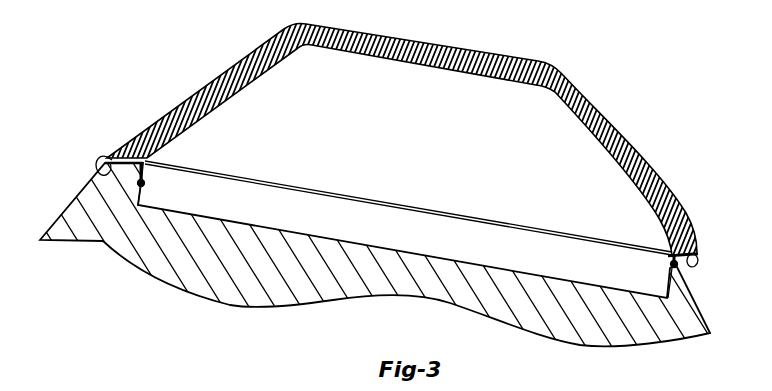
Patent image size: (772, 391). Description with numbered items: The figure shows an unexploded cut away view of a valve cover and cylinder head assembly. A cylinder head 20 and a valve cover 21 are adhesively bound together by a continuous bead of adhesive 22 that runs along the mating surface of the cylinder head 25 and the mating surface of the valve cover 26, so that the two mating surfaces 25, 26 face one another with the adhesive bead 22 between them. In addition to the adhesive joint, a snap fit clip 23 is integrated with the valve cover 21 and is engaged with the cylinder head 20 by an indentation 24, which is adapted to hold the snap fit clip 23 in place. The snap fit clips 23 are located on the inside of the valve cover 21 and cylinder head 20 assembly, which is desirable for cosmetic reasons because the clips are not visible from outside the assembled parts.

The cylinder head 20 is at (122, 237).
The valve cover 21 is at (159, 108).
The continuous bead of adhesive 22 is at (96, 171).
The snap fit clip 23 is at (150, 172).
The indentation 24 is at (143, 193).
The mating surface of the cylinder head 25 is at (107, 159).
The mating surface of the valve cover 26 is at (163, 165).